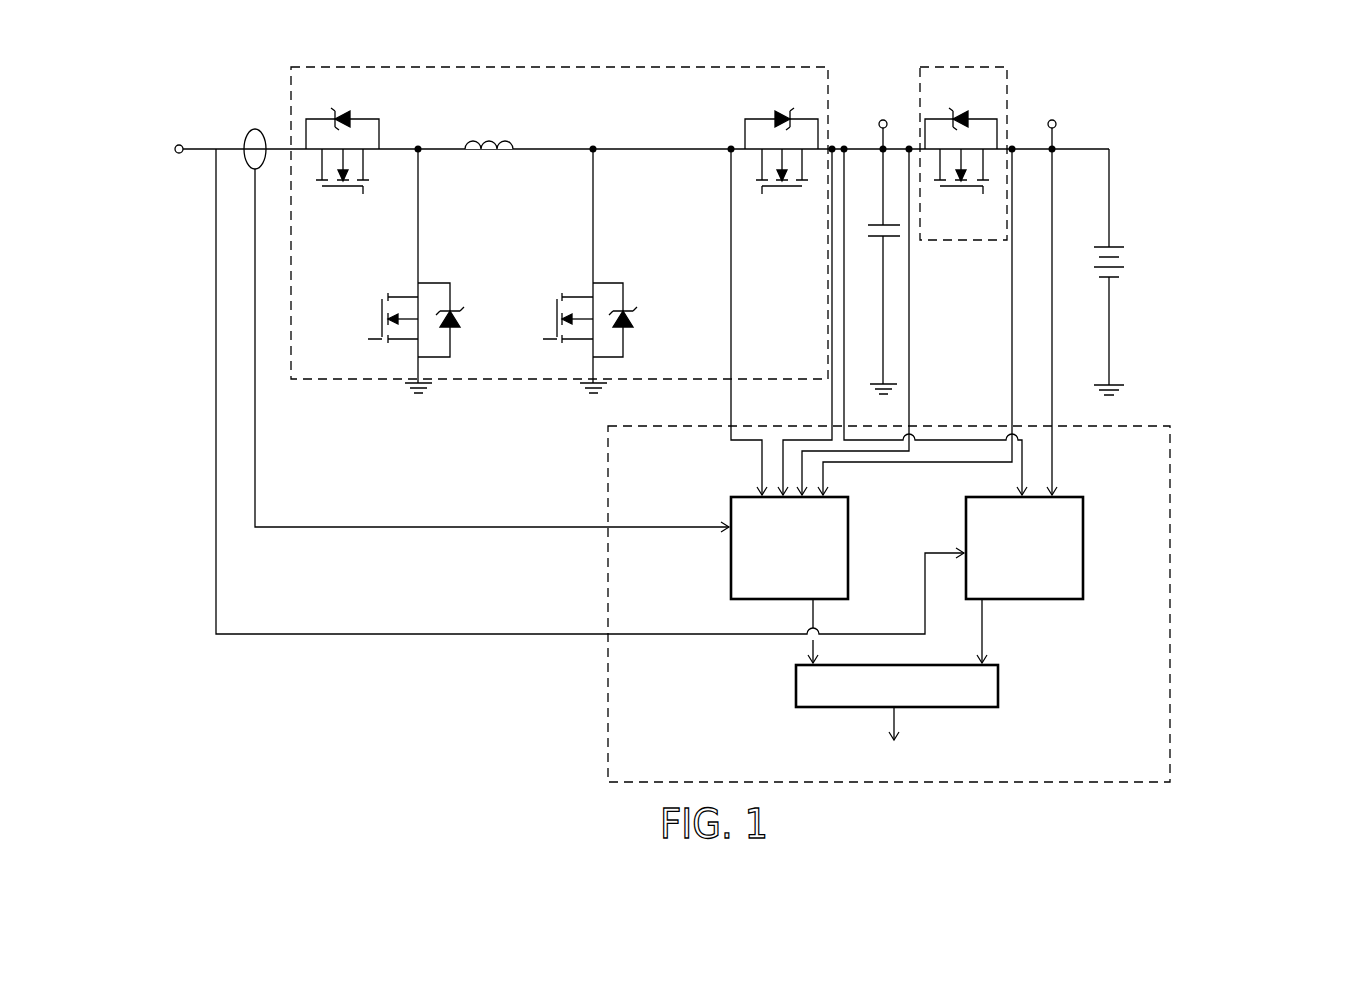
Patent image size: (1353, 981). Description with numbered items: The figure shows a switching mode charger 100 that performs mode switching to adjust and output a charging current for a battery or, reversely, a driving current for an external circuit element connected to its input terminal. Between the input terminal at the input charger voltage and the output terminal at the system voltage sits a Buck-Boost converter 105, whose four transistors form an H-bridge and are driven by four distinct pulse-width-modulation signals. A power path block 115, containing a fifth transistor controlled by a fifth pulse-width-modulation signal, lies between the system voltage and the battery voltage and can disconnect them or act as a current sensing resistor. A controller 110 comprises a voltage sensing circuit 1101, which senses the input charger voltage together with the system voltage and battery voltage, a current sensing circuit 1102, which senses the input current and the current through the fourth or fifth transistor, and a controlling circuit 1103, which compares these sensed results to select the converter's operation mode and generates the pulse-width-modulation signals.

The switching mode charger 100 is at (1200, 138).
The Buck-Boost converter 105 is at (598, 67).
The power path block 115 is at (973, 67).
The controller 110 is at (1171, 550).
The voltage sensing circuit 1101 is at (1083, 527).
The current sensing circuit 1102 is at (848, 527).
The controlling circuit 1103 is at (998, 684).